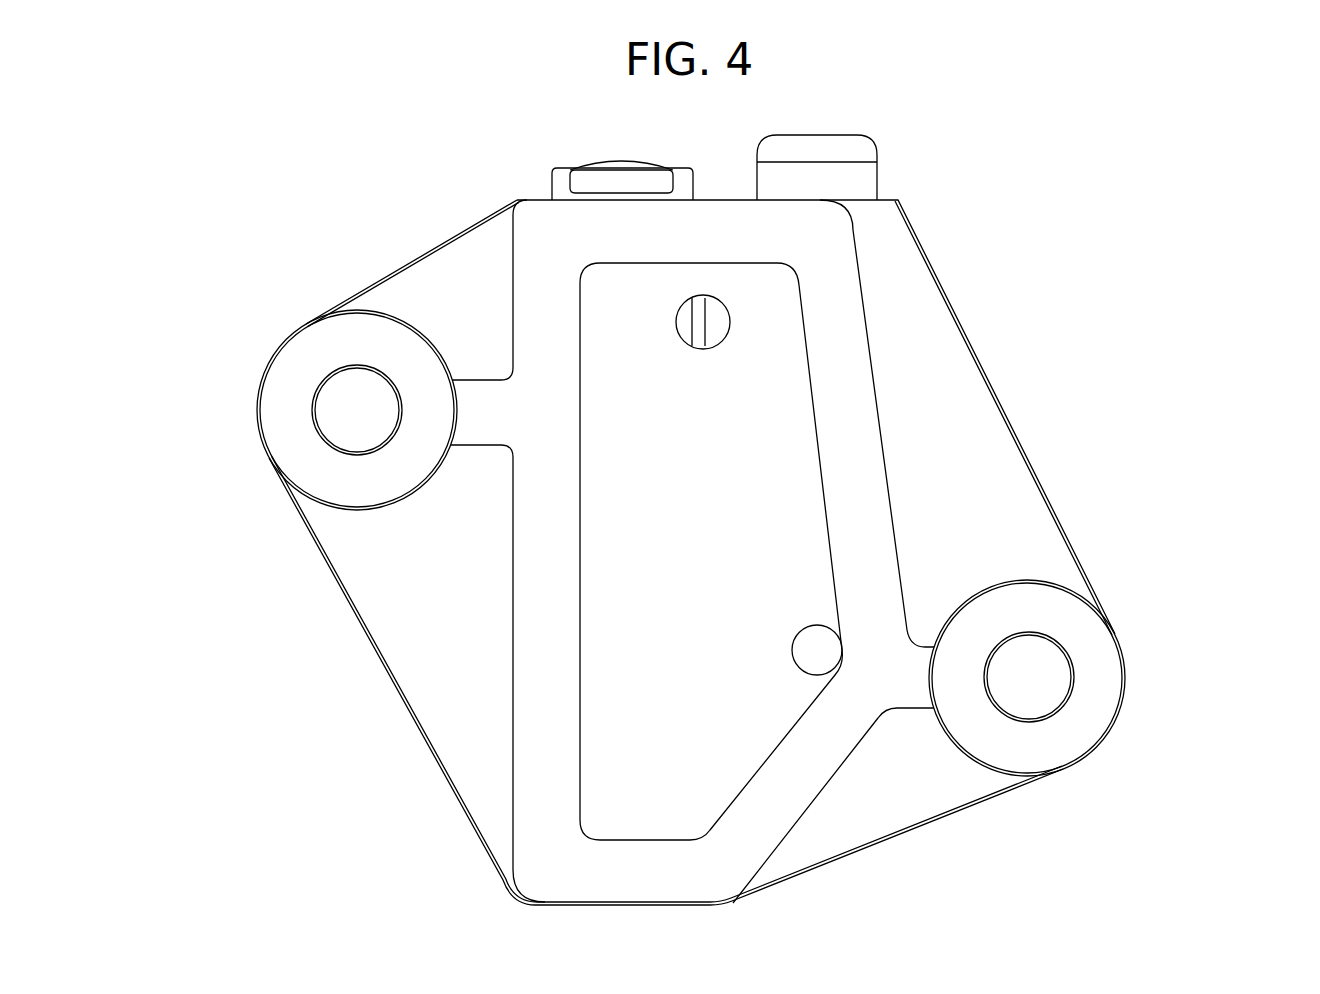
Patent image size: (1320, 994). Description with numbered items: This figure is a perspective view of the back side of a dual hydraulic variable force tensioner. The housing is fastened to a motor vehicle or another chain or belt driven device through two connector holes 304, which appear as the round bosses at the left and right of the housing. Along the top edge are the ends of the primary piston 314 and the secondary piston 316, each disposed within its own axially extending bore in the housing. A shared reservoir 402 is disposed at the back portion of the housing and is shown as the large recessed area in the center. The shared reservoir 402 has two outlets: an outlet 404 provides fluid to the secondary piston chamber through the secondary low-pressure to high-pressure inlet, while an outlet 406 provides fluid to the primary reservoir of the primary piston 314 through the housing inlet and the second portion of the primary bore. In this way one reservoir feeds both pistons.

The connector holes 304 is at (323, 433).
The primary piston 314 is at (557, 180).
The secondary piston 316 is at (877, 162).
The shared reservoir 402 is at (590, 623).
The outlet of the shared reservoir 404 is at (830, 632).
The outlet of the shared reservoir 406 is at (728, 317).